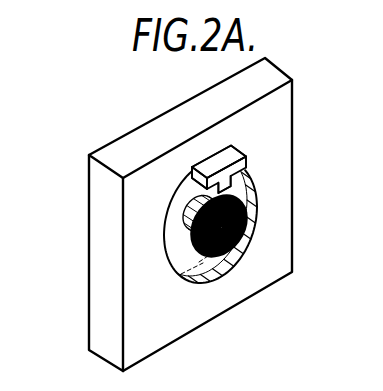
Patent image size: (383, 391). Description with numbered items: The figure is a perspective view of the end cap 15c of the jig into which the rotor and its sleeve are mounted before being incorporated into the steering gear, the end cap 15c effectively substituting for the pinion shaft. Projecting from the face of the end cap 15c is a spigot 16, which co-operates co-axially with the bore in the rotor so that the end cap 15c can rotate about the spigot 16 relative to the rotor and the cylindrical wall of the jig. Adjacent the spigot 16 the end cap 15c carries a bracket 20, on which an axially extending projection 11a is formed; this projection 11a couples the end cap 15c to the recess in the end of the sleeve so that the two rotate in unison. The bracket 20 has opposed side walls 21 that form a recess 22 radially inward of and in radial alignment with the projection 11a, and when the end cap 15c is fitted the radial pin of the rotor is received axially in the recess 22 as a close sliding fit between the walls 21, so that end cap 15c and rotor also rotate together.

The projection 11a is at (221, 157).
The bracket 20 is at (195, 165).
The side walls 21 is at (197, 181).
The recess 22 is at (231, 186).
The spigot 16 is at (216, 236).
The end cap 15c is at (227, 301).